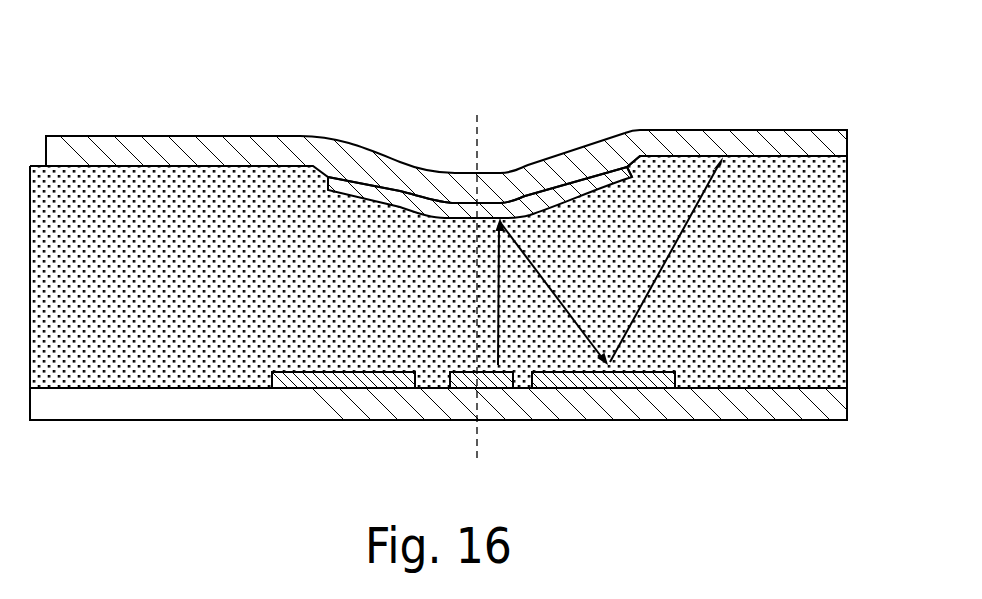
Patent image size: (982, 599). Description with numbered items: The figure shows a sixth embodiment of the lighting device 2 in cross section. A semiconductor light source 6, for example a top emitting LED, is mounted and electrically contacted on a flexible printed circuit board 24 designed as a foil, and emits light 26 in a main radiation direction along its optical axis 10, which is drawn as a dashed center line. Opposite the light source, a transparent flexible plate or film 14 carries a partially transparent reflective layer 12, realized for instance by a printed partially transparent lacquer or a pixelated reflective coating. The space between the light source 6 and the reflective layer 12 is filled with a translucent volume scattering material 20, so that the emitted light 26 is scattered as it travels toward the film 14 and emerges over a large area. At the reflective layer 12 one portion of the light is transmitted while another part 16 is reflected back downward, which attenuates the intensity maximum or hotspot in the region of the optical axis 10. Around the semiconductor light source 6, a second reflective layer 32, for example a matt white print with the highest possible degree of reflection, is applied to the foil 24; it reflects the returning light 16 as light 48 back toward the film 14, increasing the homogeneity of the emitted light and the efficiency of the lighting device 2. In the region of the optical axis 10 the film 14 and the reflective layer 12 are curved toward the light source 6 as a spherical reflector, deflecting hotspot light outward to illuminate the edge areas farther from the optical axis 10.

The lighting device 2 is at (658, 76).
The semiconductor light source 6 is at (462, 368).
The optical axis 10 is at (477, 115).
The partially transparent reflective layer 12 is at (626, 199).
The transparent plate or film 14 is at (165, 155).
The reflected part of the light 16 is at (540, 270).
The translucent volume scattering material 20 is at (155, 297).
The printed circuit board 24 is at (135, 403).
The light emitted by the semiconductor light source 26 is at (497, 270).
The second reflective layer 32 is at (328, 392).
The light reflected back towards the foil 48 is at (680, 253).